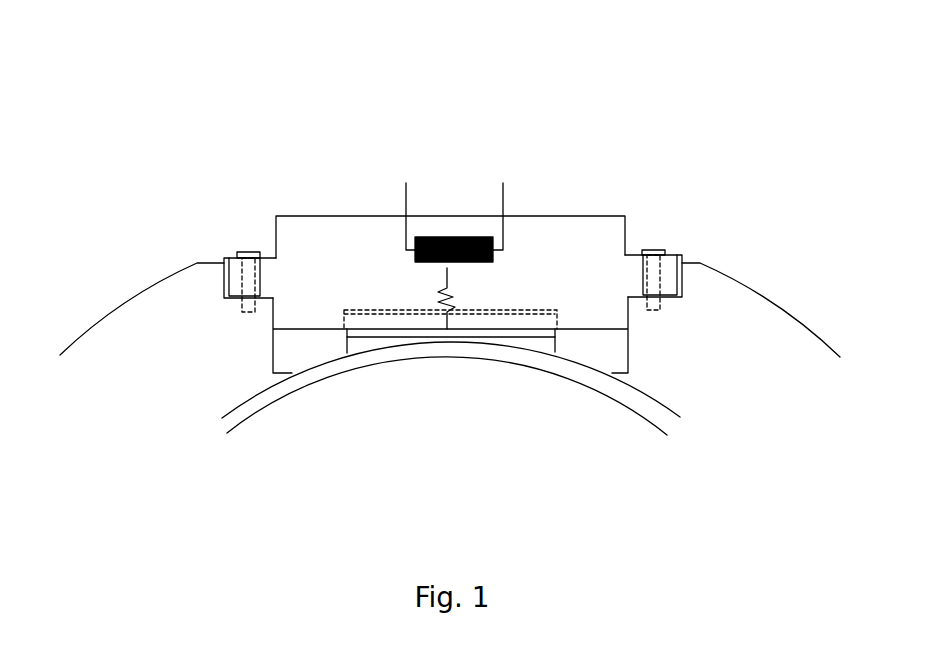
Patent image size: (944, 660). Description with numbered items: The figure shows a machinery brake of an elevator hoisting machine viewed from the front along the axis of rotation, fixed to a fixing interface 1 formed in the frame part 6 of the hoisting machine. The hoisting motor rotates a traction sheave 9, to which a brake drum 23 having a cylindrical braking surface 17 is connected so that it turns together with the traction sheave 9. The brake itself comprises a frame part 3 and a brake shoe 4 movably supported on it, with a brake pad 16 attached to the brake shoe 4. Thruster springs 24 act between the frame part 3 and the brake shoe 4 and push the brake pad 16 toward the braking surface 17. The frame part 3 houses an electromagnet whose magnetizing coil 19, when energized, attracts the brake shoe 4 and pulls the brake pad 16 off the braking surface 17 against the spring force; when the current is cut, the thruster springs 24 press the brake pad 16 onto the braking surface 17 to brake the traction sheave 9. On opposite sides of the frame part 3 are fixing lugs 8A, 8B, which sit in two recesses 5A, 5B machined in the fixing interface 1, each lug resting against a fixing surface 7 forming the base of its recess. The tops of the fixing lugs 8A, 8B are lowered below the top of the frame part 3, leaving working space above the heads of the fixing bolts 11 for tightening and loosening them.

The fixing interface 1 is at (633, 303).
The frame part 3 is at (335, 230).
The brake shoe 4 is at (360, 342).
The recess 5A is at (224, 264).
The recess 5B is at (682, 258).
The frame part 6 is at (150, 320).
The fixing surface 7 is at (235, 300).
The fixing lug 8A is at (224, 258).
The fixing lug 8B is at (680, 255).
The traction sheave 9 is at (457, 482).
The fixing bolt 11 is at (247, 252).
The brake pad 16 is at (538, 345).
The braking surface 17 is at (243, 402).
The magnetizing coil 19 is at (462, 237).
The brake drum 23 is at (277, 395).
The thruster spring 24 is at (453, 297).